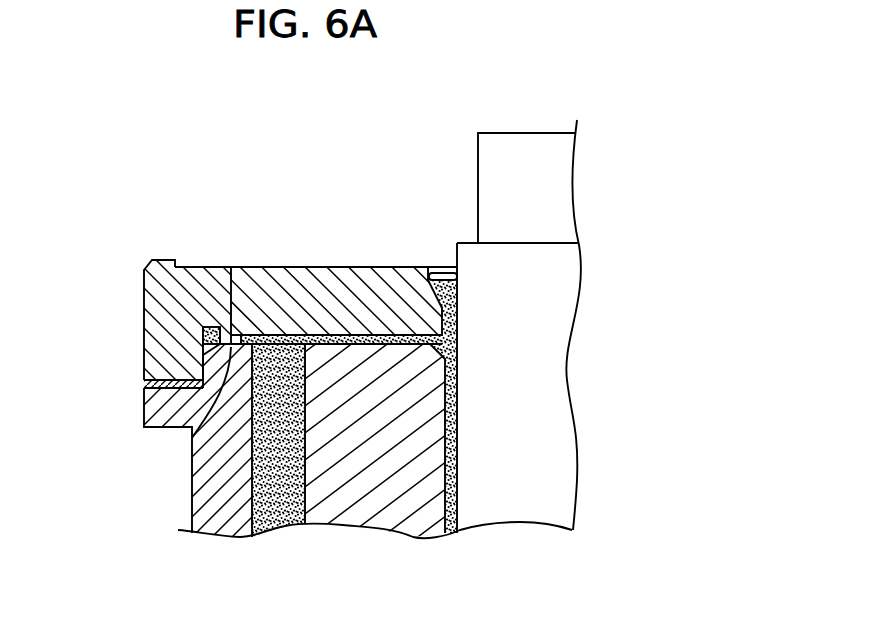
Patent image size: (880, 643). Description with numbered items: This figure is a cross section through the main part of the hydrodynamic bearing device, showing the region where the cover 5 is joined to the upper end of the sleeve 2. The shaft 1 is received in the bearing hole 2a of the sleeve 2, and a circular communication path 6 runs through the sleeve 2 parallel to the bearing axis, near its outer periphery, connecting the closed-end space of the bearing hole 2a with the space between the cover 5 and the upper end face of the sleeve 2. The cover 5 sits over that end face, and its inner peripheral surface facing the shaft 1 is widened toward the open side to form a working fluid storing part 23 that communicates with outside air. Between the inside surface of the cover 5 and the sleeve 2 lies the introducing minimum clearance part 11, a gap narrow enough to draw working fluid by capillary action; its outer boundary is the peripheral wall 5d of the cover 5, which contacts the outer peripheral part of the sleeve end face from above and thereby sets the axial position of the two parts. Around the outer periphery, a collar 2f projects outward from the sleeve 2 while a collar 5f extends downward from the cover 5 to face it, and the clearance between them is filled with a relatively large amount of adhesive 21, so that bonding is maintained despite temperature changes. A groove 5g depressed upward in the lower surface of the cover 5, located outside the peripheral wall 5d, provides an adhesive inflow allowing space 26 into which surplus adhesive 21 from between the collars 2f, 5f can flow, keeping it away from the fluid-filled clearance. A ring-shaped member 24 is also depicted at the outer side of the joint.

The shaft 1 is at (500, 163).
The sleeve 2 is at (377, 515).
The bearing hole 2a is at (452, 518).
The collar 2f is at (157, 412).
The cover 5 is at (313, 305).
The peripheral wall 5d is at (192, 438).
The collar 5f is at (167, 362).
The groove 5g is at (244, 341).
The circular communication path 6 is at (282, 517).
The introducing minimum clearance part 11 is at (375, 338).
The adhesive 21 is at (146, 384).
The working fluid storing part 23 is at (440, 255).
The ring member 24 is at (162, 260).
The adhesive inflow allowing space 26 is at (205, 346).